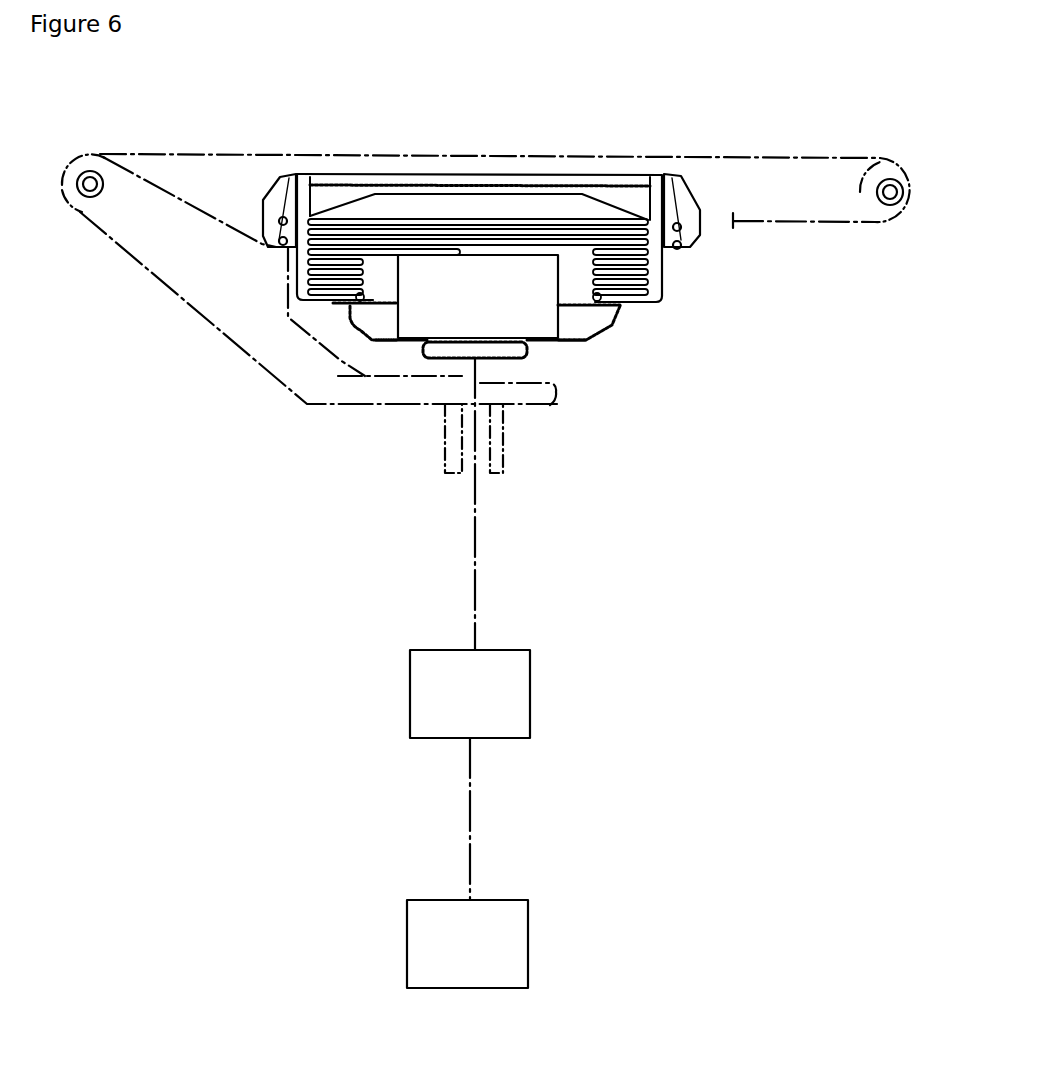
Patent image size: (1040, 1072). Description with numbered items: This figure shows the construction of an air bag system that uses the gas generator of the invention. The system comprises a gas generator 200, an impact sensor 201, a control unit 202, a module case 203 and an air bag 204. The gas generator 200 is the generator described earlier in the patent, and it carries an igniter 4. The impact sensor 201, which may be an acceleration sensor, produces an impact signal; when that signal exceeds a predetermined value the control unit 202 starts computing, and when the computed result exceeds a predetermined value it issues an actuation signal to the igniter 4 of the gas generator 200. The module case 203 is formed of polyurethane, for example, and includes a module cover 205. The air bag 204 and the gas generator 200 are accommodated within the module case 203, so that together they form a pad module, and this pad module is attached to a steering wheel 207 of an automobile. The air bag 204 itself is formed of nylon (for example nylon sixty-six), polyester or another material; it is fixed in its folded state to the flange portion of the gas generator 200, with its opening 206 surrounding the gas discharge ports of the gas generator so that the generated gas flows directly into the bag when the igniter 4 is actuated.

The igniter 4 is at (462, 358).
The gas generator 200 is at (392, 315).
The impact sensor 201 is at (407, 944).
The control unit 202 is at (410, 688).
The module case 203 is at (638, 175).
The air bag 204 is at (345, 198).
The module cover 205 is at (478, 175).
The opening 206 is at (598, 273).
The steering wheel 207 is at (767, 157).